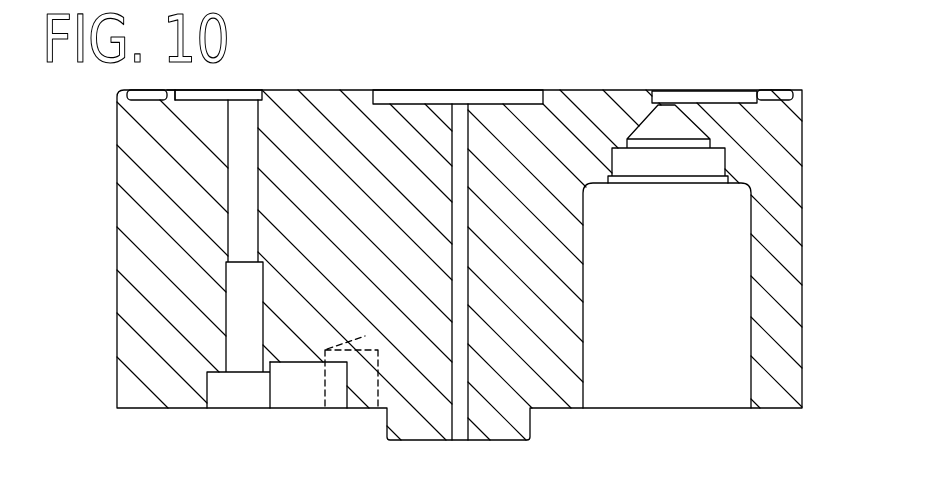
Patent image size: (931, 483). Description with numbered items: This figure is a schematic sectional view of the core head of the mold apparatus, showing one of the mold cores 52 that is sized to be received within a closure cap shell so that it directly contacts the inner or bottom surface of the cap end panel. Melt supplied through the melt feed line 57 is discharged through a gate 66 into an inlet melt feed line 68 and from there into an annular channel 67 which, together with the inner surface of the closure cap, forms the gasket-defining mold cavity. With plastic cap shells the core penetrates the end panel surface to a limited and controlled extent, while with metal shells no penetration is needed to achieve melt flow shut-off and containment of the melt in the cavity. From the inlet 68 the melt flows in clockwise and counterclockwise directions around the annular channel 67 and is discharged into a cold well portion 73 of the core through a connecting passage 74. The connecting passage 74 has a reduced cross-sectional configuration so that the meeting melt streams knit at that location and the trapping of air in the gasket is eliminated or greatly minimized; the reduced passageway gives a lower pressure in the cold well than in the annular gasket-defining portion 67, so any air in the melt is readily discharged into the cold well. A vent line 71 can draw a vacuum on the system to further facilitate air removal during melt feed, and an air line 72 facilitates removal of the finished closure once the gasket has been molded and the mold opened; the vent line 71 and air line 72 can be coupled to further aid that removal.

The mold core 52 is at (803, 158).
The melt feed line 57 is at (727, 268).
The gate 66 is at (686, 122).
The annular channel 67 is at (145, 92).
The inlet melt feed line 68 is at (705, 100).
The vent line 71 is at (228, 408).
The air line 72 is at (458, 437).
The cold well portion 73 is at (235, 92).
The connecting passage 74 is at (176, 90).